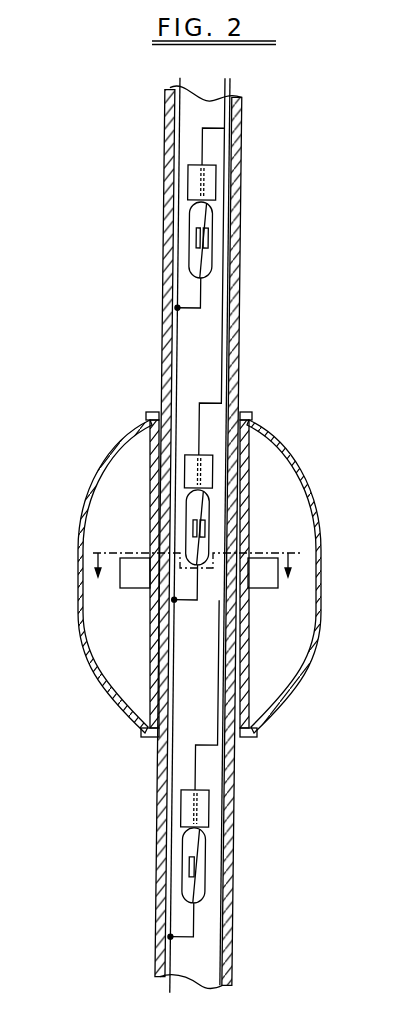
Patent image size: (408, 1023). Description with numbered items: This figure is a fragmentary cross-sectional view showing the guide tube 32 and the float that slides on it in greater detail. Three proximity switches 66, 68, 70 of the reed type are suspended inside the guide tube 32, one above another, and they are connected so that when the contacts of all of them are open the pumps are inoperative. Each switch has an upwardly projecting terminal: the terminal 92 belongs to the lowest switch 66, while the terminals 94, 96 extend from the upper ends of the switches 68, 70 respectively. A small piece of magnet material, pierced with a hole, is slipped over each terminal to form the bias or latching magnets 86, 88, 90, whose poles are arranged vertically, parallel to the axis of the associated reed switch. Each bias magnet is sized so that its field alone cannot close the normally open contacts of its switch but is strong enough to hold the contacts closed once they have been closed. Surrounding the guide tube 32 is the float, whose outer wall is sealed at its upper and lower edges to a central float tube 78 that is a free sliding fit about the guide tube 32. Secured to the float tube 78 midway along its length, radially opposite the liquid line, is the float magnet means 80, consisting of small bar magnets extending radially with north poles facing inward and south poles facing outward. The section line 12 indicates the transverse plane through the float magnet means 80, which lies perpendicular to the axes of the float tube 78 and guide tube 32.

The section line 12- 12 is at (199, 560).
The tubular housing 32 is at (233, 302).
The proximity switch 66 is at (205, 892).
The proximity switch 68 is at (186, 548).
The proximity switch 70 is at (190, 263).
The float tube 78 is at (152, 506).
The float magnet means 80 is at (280, 578).
The bias magnet 86 is at (180, 814).
The bias magnet 88 is at (186, 462).
The bias magnet 90 is at (188, 185).
The terminal 92 is at (193, 781).
The terminal 94 is at (197, 422).
The terminal 96 is at (207, 146).